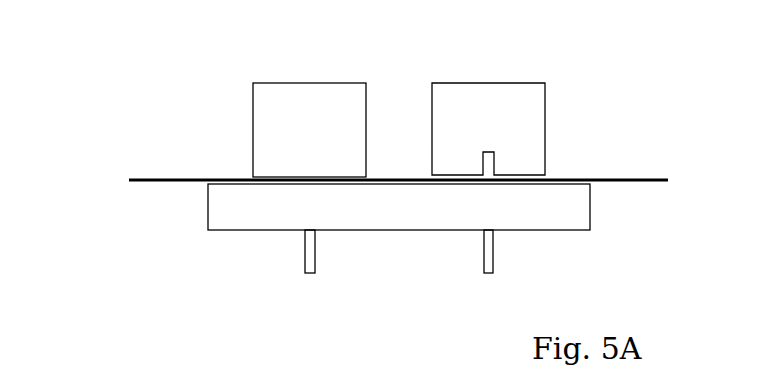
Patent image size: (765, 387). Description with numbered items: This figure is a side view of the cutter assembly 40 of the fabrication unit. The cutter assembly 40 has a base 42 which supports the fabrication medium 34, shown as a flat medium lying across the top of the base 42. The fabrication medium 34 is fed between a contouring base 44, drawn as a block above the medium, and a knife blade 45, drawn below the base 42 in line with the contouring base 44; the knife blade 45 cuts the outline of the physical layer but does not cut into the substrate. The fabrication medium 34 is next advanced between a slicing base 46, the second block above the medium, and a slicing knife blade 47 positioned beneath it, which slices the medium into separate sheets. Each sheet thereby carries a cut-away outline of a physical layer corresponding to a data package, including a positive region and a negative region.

The cutter assembly 40 is at (124, 85).
The fabrication medium 34 is at (645, 173).
The base 42 is at (218, 237).
The contouring base 44 is at (283, 78).
The slicing base 46 is at (530, 78).
The knife blade 45 is at (313, 278).
The slicing knife blade 47 is at (488, 278).